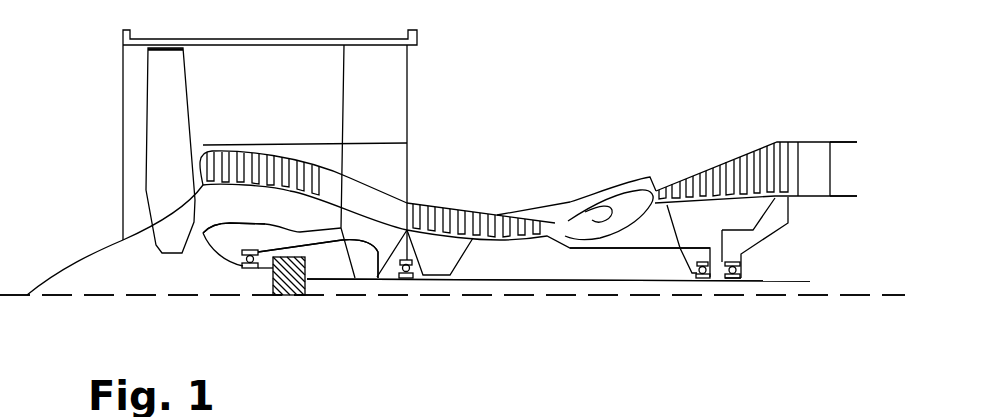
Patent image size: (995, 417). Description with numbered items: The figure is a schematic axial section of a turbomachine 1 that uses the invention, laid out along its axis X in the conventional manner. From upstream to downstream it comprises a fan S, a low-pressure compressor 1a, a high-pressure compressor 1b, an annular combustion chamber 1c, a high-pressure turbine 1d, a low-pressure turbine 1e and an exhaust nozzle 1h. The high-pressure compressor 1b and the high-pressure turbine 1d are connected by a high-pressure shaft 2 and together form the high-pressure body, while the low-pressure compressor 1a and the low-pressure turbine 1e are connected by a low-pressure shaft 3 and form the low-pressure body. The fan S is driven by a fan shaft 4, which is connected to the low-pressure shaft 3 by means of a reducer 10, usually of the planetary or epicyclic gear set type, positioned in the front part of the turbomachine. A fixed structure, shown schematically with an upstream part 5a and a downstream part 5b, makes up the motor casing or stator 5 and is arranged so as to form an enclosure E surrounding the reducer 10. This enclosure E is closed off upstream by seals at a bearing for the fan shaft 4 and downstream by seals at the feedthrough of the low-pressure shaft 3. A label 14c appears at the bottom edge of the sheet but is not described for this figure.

The turbomachine 1 is at (527, 120).
The low-pressure compressor 1a is at (225, 160).
The high-pressure compressor 1b is at (440, 210).
The annular combustion chamber 1c is at (608, 213).
The high-pressure turbine 1d is at (660, 192).
The low-pressure turbine 1e is at (784, 160).
The exhaust nozzle 1h is at (840, 167).
The high-pressure shaft 2 is at (603, 250).
The low-pressure shaft 3 is at (508, 281).
The fan shaft 4 is at (232, 267).
The stator 5 is at (322, 226).
The upstream part 5a is at (203, 233).
The downstream part 5b is at (373, 283).
The reducer 10 is at (285, 275).
The enclosure E is at (320, 243).
The fan S is at (162, 102).
The axis of rotation X is at (12, 297).
The element of following figure 14c is at (474, 416).